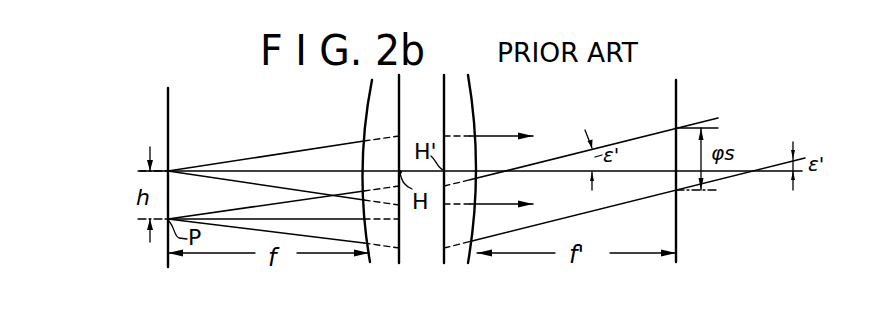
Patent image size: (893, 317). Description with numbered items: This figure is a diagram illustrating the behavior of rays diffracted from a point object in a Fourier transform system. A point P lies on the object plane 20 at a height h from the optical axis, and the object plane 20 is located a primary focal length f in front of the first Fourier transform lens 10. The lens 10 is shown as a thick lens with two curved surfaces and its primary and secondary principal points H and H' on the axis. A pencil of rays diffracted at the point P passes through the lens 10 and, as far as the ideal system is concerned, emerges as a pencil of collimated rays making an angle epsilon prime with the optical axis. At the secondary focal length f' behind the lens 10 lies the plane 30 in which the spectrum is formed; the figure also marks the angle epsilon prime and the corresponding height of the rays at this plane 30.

The first Fourier transform lens 10 is at (486, 271).
The object plane 20 is at (167, 243).
The spectrum plane 30 is at (676, 259).